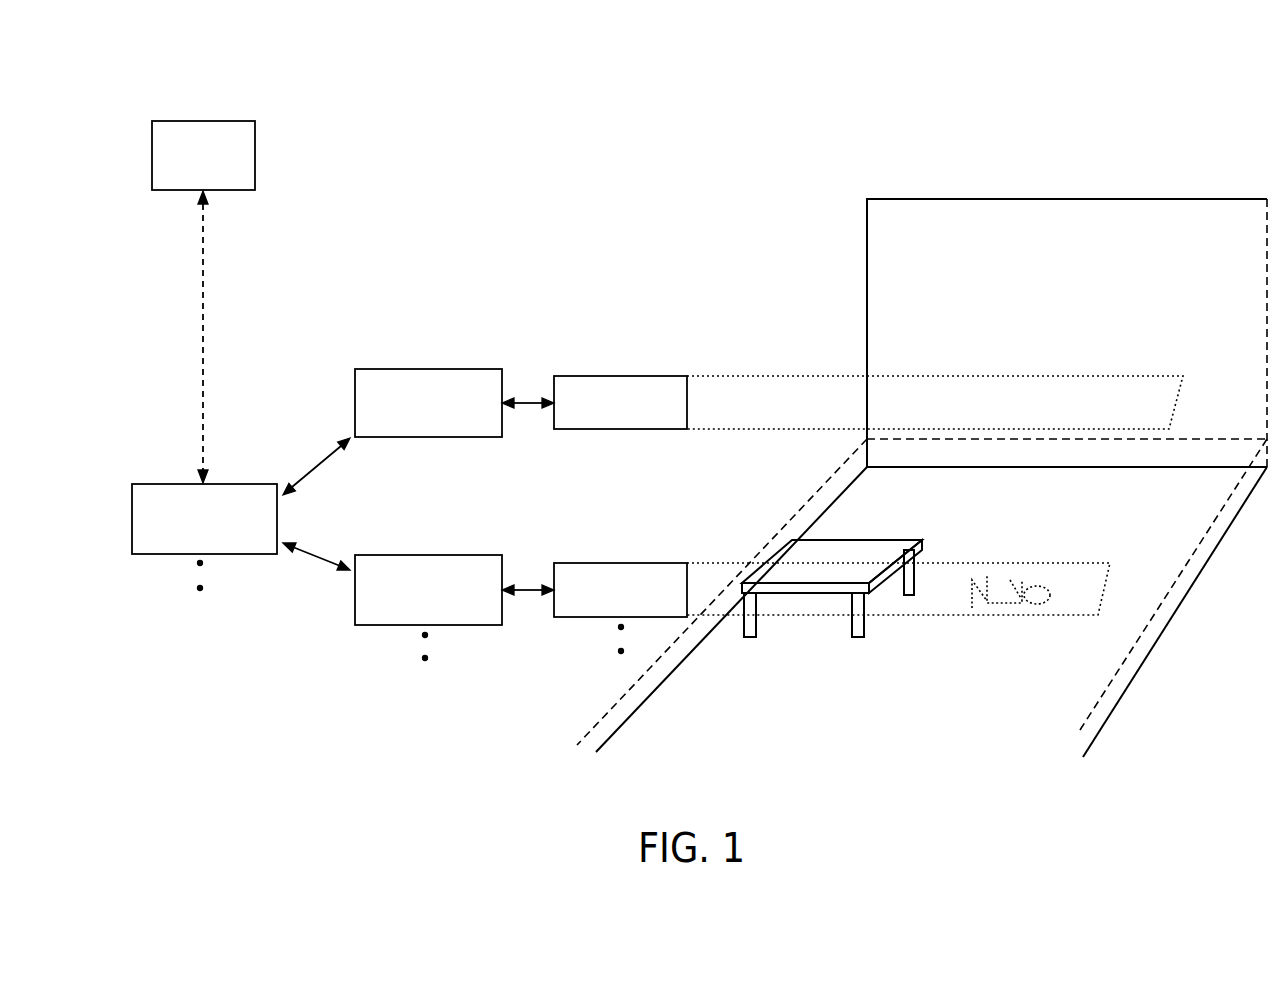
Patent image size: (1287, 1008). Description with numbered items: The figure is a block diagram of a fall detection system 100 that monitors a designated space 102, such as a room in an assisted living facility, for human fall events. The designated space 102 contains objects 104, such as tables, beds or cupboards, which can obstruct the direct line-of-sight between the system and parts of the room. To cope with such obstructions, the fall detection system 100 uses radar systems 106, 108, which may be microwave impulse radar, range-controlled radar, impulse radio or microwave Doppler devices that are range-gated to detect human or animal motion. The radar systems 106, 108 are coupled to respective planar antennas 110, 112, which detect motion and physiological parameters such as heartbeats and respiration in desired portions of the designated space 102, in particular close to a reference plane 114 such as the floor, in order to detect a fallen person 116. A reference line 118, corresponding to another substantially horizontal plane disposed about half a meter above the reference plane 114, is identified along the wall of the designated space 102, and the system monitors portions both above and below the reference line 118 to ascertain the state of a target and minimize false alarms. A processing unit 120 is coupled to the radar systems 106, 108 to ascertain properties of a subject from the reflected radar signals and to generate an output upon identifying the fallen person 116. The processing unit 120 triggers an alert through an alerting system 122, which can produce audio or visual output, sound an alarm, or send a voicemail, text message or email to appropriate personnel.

The fall detection system 100 is at (488, 265).
The designated space 102 is at (849, 484).
The objects 104 is at (866, 618).
The radar system 106 is at (430, 369).
The radar system 108 is at (381, 626).
The antenna 110 is at (632, 376).
The antenna 112 is at (566, 617).
The reference plane 114 is at (775, 728).
The fallen person 116 is at (1041, 586).
The reference line 118 is at (1200, 440).
The processing unit 120 is at (248, 484).
The alerting system 122 is at (203, 121).